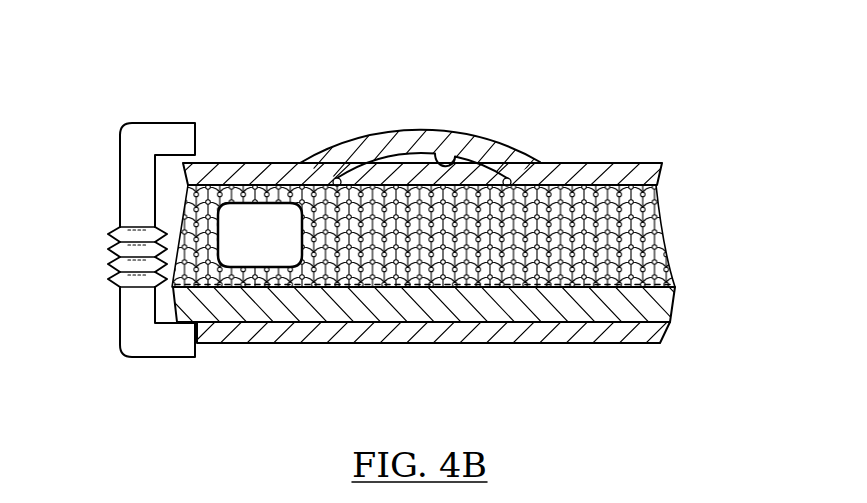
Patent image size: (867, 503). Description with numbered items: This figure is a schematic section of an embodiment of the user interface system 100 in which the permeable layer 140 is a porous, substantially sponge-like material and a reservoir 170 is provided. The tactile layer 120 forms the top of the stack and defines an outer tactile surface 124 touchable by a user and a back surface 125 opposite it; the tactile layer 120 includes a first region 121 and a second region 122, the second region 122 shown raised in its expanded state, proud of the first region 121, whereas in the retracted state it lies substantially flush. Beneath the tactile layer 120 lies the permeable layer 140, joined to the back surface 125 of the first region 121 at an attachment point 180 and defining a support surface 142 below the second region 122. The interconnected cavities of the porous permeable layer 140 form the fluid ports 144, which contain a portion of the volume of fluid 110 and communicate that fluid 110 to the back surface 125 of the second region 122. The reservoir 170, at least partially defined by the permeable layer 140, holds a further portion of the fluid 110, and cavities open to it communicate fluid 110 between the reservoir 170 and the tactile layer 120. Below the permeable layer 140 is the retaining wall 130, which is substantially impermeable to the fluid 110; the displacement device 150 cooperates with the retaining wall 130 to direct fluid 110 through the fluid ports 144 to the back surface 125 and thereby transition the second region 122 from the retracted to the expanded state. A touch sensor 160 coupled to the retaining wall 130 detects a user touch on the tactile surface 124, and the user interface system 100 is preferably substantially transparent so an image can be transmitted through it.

The user interface system 100 is at (142, 87).
The volume of fluid 110 is at (443, 240).
The tactile layer 120 is at (665, 162).
The first region 121 is at (457, 132).
The second region 122 is at (438, 132).
The tactile surface 124 is at (640, 162).
The back surface 125 is at (446, 166).
The retaining wall 130 is at (675, 288).
The permeable layer 140 is at (481, 236).
The support surface 142 is at (378, 185).
The fluid ports 144 is at (678, 190).
The displacement device 150 is at (110, 248).
The touch sensor 160 is at (560, 332).
The reservoir 170 is at (268, 245).
The attachment point 180 is at (336, 177).